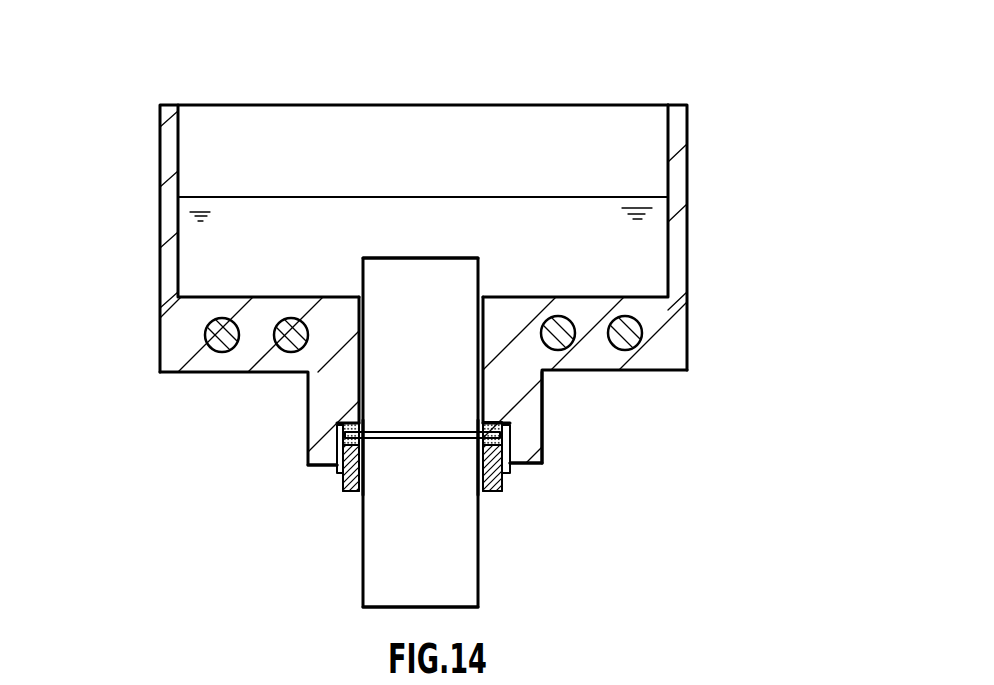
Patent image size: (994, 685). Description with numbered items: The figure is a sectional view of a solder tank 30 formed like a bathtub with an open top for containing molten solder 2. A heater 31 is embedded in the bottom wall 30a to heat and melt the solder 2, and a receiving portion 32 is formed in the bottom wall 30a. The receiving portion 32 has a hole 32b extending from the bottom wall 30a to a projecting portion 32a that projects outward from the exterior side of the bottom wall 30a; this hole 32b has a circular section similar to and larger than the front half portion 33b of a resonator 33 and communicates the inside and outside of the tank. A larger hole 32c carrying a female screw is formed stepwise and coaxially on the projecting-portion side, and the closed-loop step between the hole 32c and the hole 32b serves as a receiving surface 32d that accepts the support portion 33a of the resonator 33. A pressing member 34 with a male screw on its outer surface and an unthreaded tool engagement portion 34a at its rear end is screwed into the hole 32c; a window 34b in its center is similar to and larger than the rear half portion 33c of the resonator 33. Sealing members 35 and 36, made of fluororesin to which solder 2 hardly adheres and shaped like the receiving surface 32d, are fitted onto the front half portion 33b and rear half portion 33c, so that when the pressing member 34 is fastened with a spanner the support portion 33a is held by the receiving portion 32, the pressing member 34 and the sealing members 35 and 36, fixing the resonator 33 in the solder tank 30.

The molten solder 2 is at (437, 196).
The solder tank 30 is at (660, 100).
The bottom wall 30a is at (675, 337).
The heater 31 is at (202, 331).
The receiving portion 32 is at (355, 292).
The projecting portion 32a is at (546, 383).
The hole 32b is at (357, 368).
The hole 32c is at (347, 440).
The receiving surface 32d is at (357, 422).
The resonator 33 is at (375, 256).
The support portion 33a is at (425, 438).
The front half portion 33b is at (462, 265).
The rear half portion 33c is at (480, 580).
The pressing member 34 is at (492, 491).
The tool engagement portion 34a is at (510, 478).
The window 34b is at (350, 491).
The sealing member 35 is at (510, 420).
The sealing member 36 is at (510, 440).